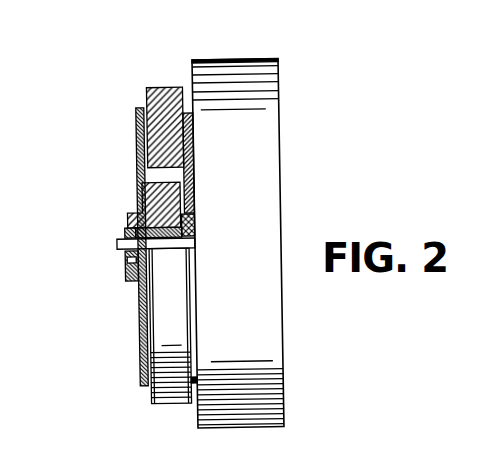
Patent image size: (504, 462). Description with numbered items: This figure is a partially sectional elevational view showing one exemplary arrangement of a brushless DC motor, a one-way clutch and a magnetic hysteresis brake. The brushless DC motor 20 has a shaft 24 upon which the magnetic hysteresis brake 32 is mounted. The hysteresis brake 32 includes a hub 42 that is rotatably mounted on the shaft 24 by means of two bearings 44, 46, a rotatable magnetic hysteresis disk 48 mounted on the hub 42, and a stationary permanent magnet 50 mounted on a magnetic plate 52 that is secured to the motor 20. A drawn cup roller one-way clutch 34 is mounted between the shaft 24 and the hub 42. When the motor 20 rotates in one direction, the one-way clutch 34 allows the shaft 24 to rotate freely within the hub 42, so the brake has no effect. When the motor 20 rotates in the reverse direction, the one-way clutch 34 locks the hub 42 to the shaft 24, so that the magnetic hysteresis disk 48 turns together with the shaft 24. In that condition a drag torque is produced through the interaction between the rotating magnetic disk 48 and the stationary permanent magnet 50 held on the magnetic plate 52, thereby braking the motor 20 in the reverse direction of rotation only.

The brushless DC motor 20 is at (263, 128).
The magnetic hysteresis brake 32 is at (144, 78).
The stationary permanent magnet 50 is at (163, 87).
The magnetic plate 52 is at (193, 150).
The magnetic hysteresis disk 48 is at (136, 127).
The hub 42 is at (131, 215).
The bearing 44 is at (193, 221).
The bearing 46 is at (124, 235).
The drawn cup roller one-way clutch 34 is at (160, 248).
The shaft 24 is at (117, 244).